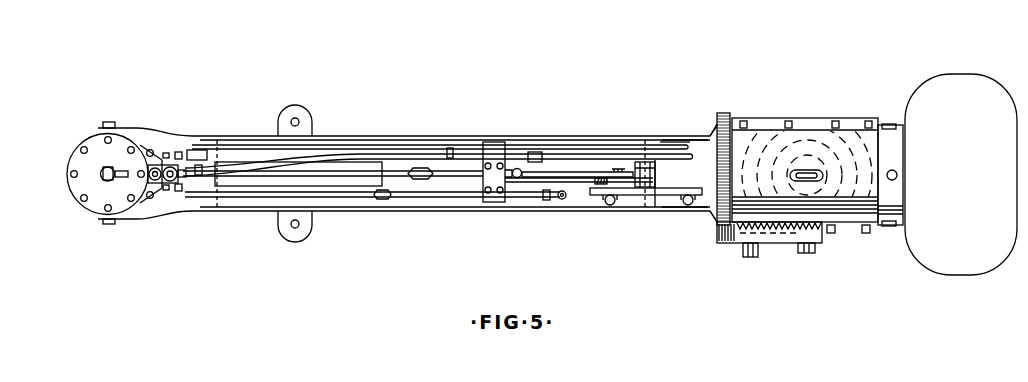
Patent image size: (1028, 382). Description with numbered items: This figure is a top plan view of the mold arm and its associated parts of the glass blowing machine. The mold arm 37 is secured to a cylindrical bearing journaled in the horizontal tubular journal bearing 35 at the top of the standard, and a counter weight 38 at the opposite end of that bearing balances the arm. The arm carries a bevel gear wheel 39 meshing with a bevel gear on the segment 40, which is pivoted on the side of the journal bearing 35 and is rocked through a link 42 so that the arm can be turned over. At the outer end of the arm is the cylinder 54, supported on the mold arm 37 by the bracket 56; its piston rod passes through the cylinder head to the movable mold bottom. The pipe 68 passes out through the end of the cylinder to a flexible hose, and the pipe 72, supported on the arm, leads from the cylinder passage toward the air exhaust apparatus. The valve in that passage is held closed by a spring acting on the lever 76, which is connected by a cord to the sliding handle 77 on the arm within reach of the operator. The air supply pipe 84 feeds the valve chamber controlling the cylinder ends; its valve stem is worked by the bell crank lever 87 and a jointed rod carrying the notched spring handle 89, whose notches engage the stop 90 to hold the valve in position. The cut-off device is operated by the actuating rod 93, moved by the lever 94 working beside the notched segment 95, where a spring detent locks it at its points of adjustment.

The horizontal tubular journal bearing 35 is at (807, 152).
The mold arm 37 is at (598, 142).
The counter weight 38 is at (947, 174).
The bevel gear wheel 39 is at (733, 120).
The segment 40 is at (779, 240).
The link 42 is at (745, 246).
The cylinder 54 is at (87, 181).
The bracket 56 is at (152, 130).
The pipe 68 is at (106, 170).
The pipe 72 is at (322, 142).
The lever 76 is at (214, 163).
The sliding handle 77 is at (514, 168).
The air supply pipe 84 is at (277, 164).
The bell crank lever 87 is at (165, 192).
The notched spring handle 89 is at (562, 200).
The stop 90 is at (544, 198).
The actuating rod 93 is at (543, 176).
The lever 94 is at (594, 186).
The notched segment 95 is at (634, 196).